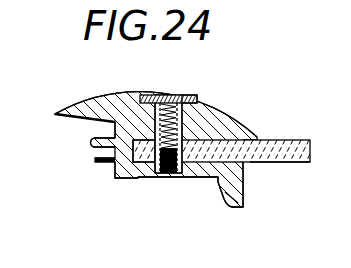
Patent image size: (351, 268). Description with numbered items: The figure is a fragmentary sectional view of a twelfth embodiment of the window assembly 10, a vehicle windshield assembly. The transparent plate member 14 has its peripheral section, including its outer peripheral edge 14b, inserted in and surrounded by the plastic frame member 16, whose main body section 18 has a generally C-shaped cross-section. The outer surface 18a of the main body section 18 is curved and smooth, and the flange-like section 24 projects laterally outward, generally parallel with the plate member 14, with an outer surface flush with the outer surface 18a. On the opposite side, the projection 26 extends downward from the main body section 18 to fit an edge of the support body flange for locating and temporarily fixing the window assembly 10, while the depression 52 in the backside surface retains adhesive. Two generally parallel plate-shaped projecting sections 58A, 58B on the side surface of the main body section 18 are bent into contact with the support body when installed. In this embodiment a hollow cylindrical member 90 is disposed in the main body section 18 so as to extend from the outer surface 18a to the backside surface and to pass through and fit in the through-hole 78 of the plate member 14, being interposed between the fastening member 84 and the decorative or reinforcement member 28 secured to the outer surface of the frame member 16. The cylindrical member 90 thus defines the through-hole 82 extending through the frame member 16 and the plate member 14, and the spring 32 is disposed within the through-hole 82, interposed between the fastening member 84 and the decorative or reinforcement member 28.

The window assembly 10 is at (117, 198).
The transparent plate member 14 is at (285, 163).
The outer peripheral edge 14b is at (116, 165).
The frame member 16 is at (256, 135).
The main body section 18 is at (225, 125).
The outer surface 18a is at (114, 96).
The flange-like section 24 is at (72, 114).
The projection 26 is at (246, 204).
The decorative or reinforcement member 28 is at (163, 95).
The spring 32 is at (115, 130).
The depression 52 is at (203, 178).
The projecting section 58A is at (92, 142).
The projecting section 58B is at (95, 159).
The through-hole 78 is at (150, 178).
The through-hole 82 is at (180, 95).
The fastening member 84 is at (167, 174).
The hollow cylindrical member 90 is at (183, 122).